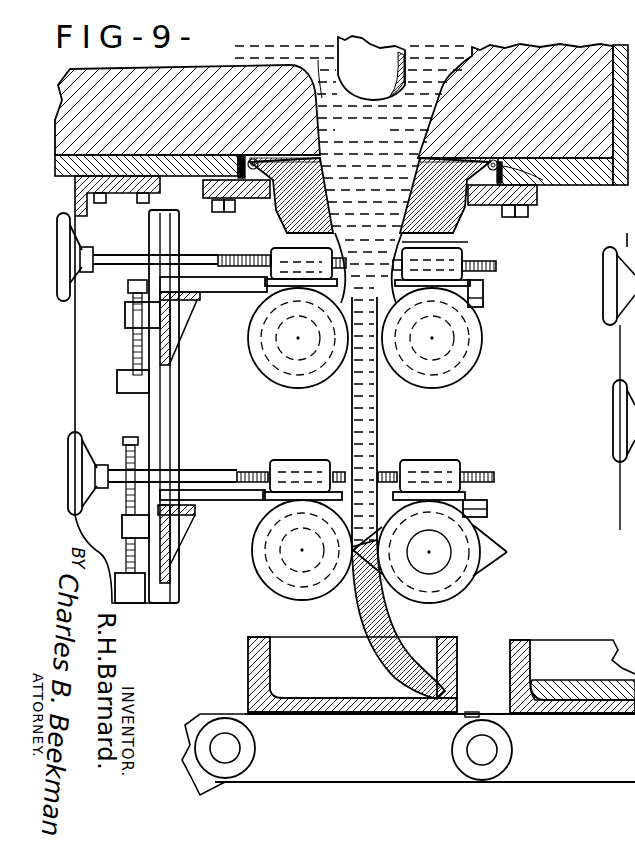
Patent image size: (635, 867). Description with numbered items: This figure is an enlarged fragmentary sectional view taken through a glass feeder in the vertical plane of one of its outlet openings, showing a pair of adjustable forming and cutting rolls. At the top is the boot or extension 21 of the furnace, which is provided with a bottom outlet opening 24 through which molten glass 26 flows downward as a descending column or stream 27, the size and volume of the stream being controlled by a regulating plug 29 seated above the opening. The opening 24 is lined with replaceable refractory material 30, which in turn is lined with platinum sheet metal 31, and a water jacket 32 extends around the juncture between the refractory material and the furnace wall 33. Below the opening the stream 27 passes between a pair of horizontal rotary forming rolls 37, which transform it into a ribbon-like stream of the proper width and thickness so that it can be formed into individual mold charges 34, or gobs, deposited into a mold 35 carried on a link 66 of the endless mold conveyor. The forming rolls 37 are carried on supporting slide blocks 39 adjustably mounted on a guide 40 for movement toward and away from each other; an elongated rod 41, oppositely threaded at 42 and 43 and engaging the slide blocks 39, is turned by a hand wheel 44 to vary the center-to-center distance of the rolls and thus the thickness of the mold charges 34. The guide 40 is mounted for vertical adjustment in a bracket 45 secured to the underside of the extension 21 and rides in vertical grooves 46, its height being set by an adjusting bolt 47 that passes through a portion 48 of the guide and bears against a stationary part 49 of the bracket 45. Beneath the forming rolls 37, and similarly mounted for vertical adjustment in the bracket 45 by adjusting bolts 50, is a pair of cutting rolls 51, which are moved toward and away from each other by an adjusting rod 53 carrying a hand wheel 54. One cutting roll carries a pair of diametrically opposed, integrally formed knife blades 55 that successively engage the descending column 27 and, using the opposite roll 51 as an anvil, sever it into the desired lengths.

The boot or extension 21 is at (615, 44).
The bottom outlet opening 24 is at (468, 242).
The molten glass 26 is at (388, 138).
The descending column or stream 27 is at (378, 413).
The regulating plug 29 is at (380, 60).
The refractory material 30 is at (457, 205).
The platinum sheet metal 31 is at (418, 184).
The water jacket 32 is at (543, 180).
The furnace wall 33 is at (590, 180).
The mold charge 34 is at (373, 624).
The mold 35 is at (463, 637).
The forming roll 37 is at (290, 384).
The supporting slide block 39 is at (265, 288).
The guide 40 is at (200, 300).
The elongated rod 41 is at (187, 256).
The threaded portion 42 is at (497, 258).
The threaded portion 43 is at (263, 247).
The hand wheel 44 is at (58, 241).
The bracket 45 is at (174, 420).
The vertical groove 46 is at (166, 394).
The adjusting bolt 47 is at (128, 287).
The portion of the guide 48 is at (125, 320).
The stationary part 49 is at (118, 378).
The adjusting bolt 50 is at (127, 441).
The cutting roll 51 is at (300, 601).
The adjusting rod 53 is at (233, 462).
The hand wheel 54 is at (68, 458).
The knife blade 55 is at (510, 540).
The link 66 is at (343, 777).